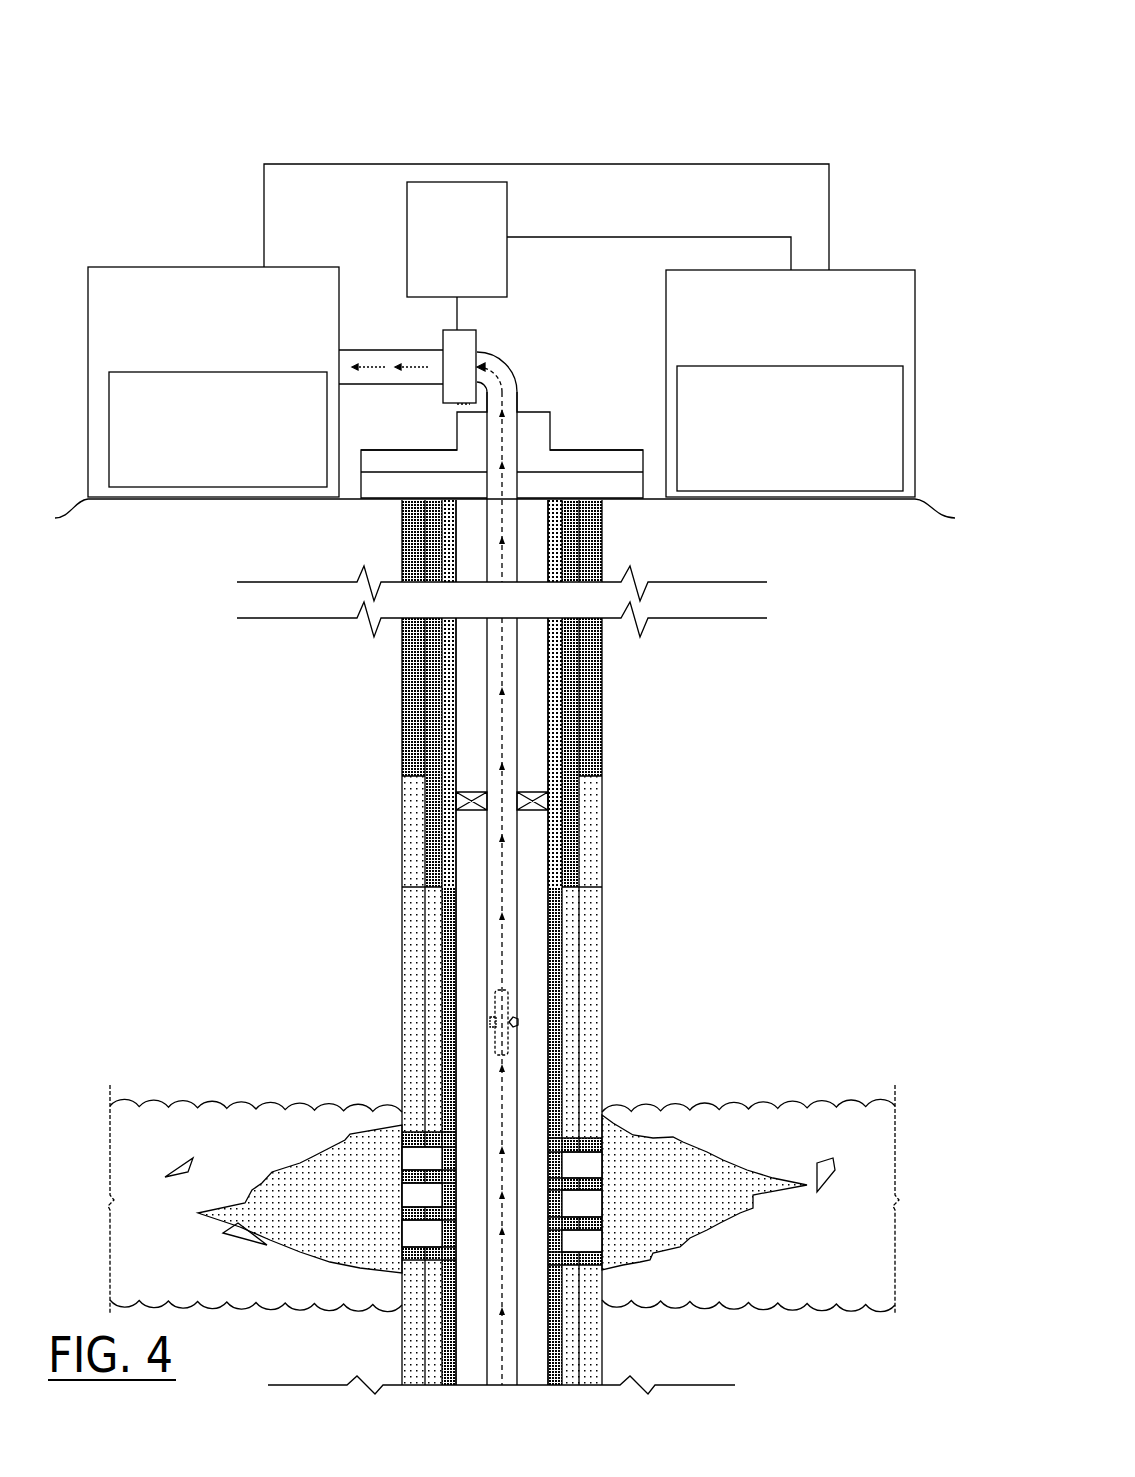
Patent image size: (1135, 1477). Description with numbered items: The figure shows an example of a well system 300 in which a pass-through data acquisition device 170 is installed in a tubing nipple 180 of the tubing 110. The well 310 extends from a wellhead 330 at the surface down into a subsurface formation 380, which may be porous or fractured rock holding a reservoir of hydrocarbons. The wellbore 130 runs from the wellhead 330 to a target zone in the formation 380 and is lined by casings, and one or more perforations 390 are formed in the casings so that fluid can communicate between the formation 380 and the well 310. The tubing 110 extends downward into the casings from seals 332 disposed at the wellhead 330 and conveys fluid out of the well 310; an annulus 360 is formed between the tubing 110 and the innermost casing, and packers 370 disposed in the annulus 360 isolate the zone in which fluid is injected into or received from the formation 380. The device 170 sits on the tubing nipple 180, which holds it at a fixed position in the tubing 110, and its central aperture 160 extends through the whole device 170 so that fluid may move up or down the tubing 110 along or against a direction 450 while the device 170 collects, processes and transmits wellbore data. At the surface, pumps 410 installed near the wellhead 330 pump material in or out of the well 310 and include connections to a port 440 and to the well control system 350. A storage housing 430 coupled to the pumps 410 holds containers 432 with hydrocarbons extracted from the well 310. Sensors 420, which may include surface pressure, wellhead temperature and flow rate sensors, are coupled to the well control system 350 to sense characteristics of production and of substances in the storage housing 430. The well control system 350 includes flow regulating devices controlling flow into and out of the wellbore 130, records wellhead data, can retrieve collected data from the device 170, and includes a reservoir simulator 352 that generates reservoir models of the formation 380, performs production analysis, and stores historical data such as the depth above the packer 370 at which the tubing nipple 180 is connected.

The well system 300 is at (670, 124).
The well 310 is at (345, 153).
The wellhead 330 is at (582, 432).
The seals 332 is at (550, 462).
The well control system 350 is at (790, 383).
The reservoir simulator 352 is at (790, 428).
The annulus 360 is at (540, 700).
The packers 370 is at (518, 807).
The subsurface formation 380 is at (310, 1158).
The perforations 390 is at (603, 1148).
The pumps 410 is at (450, 377).
The sensors 420 is at (457, 239).
The storage housing 430 is at (213, 382).
The containers 432 is at (218, 429).
The port 440 is at (457, 410).
The direction 450 is at (500, 665).
The tubing 110 is at (518, 883).
The wellbore 130 is at (549, 648).
The central aperture 160 is at (504, 990).
The device 170 is at (497, 1035).
The tubing nipple 180 is at (513, 1022).